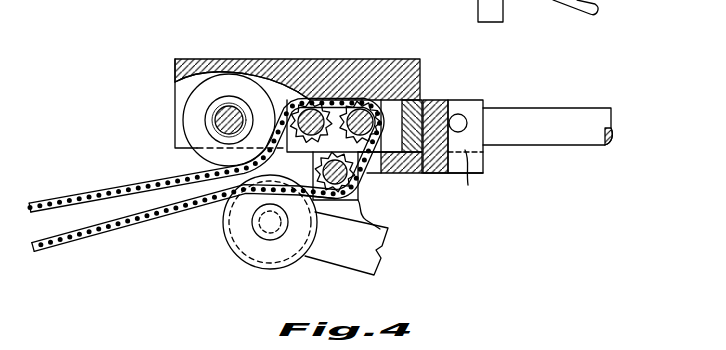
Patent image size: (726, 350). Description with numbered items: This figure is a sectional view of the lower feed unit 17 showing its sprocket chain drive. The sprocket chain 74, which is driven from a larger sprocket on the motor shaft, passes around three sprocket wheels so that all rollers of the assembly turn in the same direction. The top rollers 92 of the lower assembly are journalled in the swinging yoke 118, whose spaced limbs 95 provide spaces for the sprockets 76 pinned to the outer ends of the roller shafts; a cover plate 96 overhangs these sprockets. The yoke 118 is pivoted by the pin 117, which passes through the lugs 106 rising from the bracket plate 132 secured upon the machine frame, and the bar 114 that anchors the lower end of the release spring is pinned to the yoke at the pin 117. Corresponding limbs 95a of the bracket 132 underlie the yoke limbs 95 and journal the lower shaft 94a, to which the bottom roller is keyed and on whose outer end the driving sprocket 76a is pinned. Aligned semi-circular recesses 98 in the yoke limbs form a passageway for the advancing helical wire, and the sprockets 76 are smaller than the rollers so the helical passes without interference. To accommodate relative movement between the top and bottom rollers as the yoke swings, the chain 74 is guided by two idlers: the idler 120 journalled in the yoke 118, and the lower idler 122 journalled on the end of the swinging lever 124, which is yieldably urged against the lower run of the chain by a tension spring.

The housing 17 is at (265, 55).
The cover plate 96 is at (315, 72).
The idler 120 is at (197, 114).
The top rollers 92 is at (277, 104).
The limbs 95 is at (390, 123).
The yoke 118 is at (416, 172).
The semi-circular recesses 98 is at (368, 178).
The bracket plate 132 is at (443, 175).
The pivot pin 117 is at (459, 122).
The lugs 106 is at (468, 185).
The bar 114 is at (572, 120).
The sprockets 76 is at (345, 105).
The driving sprocket 76a is at (363, 185).
The idler 122 is at (252, 242).
The swinging lever 124 is at (372, 256).
The limbs 95a is at (386, 229).
The sprocket chain 74 is at (112, 188).
The lower shaft 94a is at (308, 186).